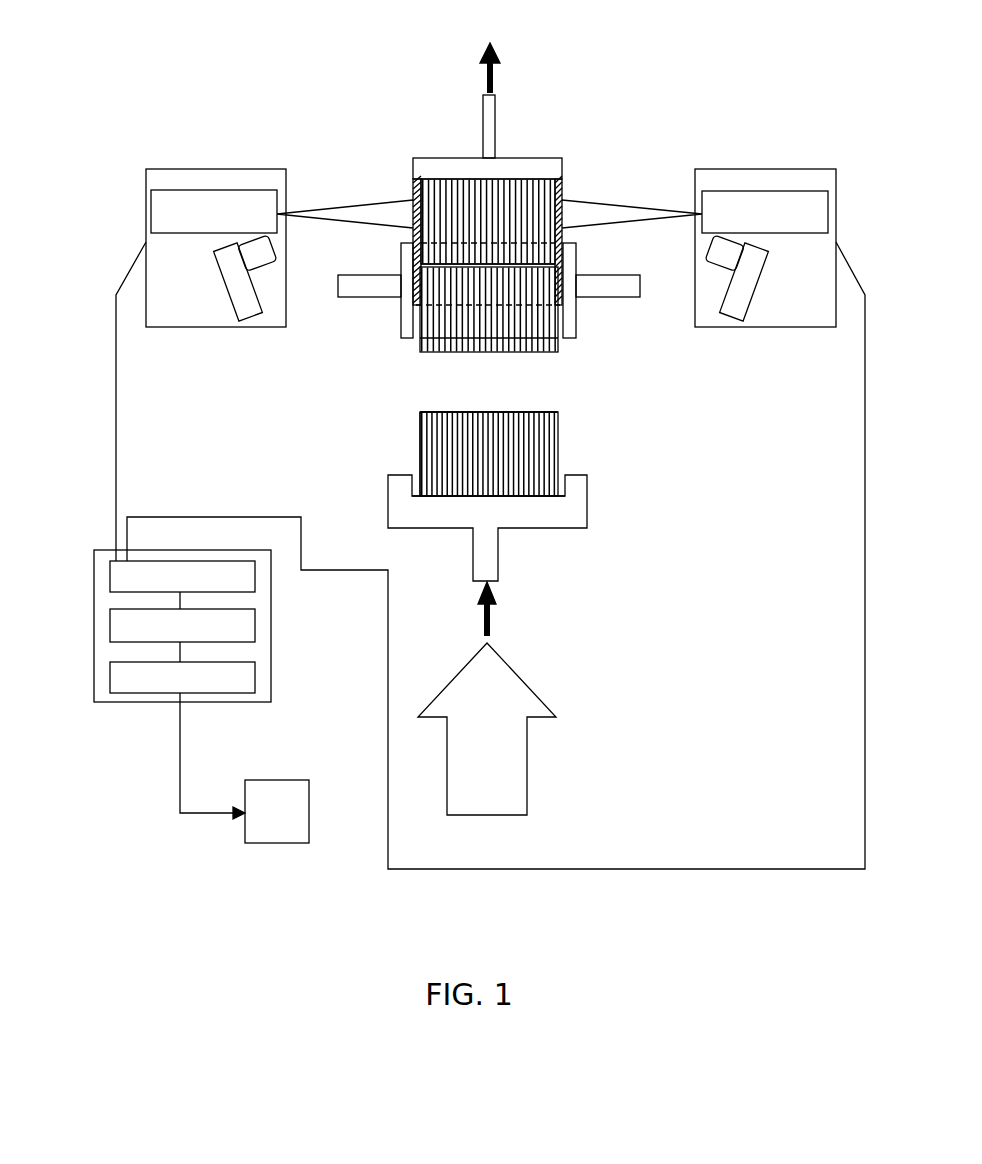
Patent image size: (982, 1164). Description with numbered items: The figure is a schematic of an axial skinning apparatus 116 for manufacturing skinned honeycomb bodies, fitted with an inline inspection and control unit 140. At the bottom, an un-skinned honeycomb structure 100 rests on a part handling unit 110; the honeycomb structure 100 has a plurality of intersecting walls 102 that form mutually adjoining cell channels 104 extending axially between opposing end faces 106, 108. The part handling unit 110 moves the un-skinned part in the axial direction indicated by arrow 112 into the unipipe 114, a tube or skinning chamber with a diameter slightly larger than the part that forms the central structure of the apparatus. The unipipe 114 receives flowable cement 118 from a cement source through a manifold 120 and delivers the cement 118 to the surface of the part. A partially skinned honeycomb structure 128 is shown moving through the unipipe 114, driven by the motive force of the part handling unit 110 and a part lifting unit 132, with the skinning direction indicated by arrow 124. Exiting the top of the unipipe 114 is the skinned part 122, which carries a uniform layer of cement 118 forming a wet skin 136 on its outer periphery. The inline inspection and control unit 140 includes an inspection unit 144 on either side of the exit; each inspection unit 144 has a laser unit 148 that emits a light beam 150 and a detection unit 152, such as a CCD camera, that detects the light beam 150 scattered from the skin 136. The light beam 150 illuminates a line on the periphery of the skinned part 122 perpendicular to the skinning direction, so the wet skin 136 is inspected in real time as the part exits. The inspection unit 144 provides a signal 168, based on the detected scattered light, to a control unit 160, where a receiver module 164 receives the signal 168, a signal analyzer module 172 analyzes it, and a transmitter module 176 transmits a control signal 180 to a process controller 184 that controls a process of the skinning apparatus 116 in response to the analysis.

The honeycomb structure 100 is at (548, 445).
The intersecting walls 102 is at (432, 455).
The cell channels 104 is at (426, 428).
The end face 106 is at (478, 497).
The end face 108 is at (495, 412).
The part handling unit 110 is at (566, 517).
The arrow 112 is at (485, 83).
The unipipe 114 is at (406, 322).
The axial skinning apparatus 116 is at (318, 72).
The cement 118 is at (556, 265).
The manifold 120 is at (361, 288).
The skinned part 122 is at (545, 205).
The arrow 124 is at (478, 763).
The honeycomb structure 128 is at (548, 345).
The part lifting unit 132 is at (524, 165).
The wet skin 136 is at (415, 190).
The inline inspection and control unit 140 is at (198, 116).
The inspection unit 144 is at (146, 170).
The laser unit 148 is at (489, 211).
The light beam 150 is at (376, 212).
The detection unit 152 is at (232, 278).
The control unit 160 is at (100, 565).
The receiver module 164 is at (182, 576).
The signal 168 is at (116, 438).
The signal analyzer module 172 is at (182, 625).
The transmitter module 176 is at (182, 677).
The control signal 180 is at (182, 722).
The process controller 184 is at (277, 811).